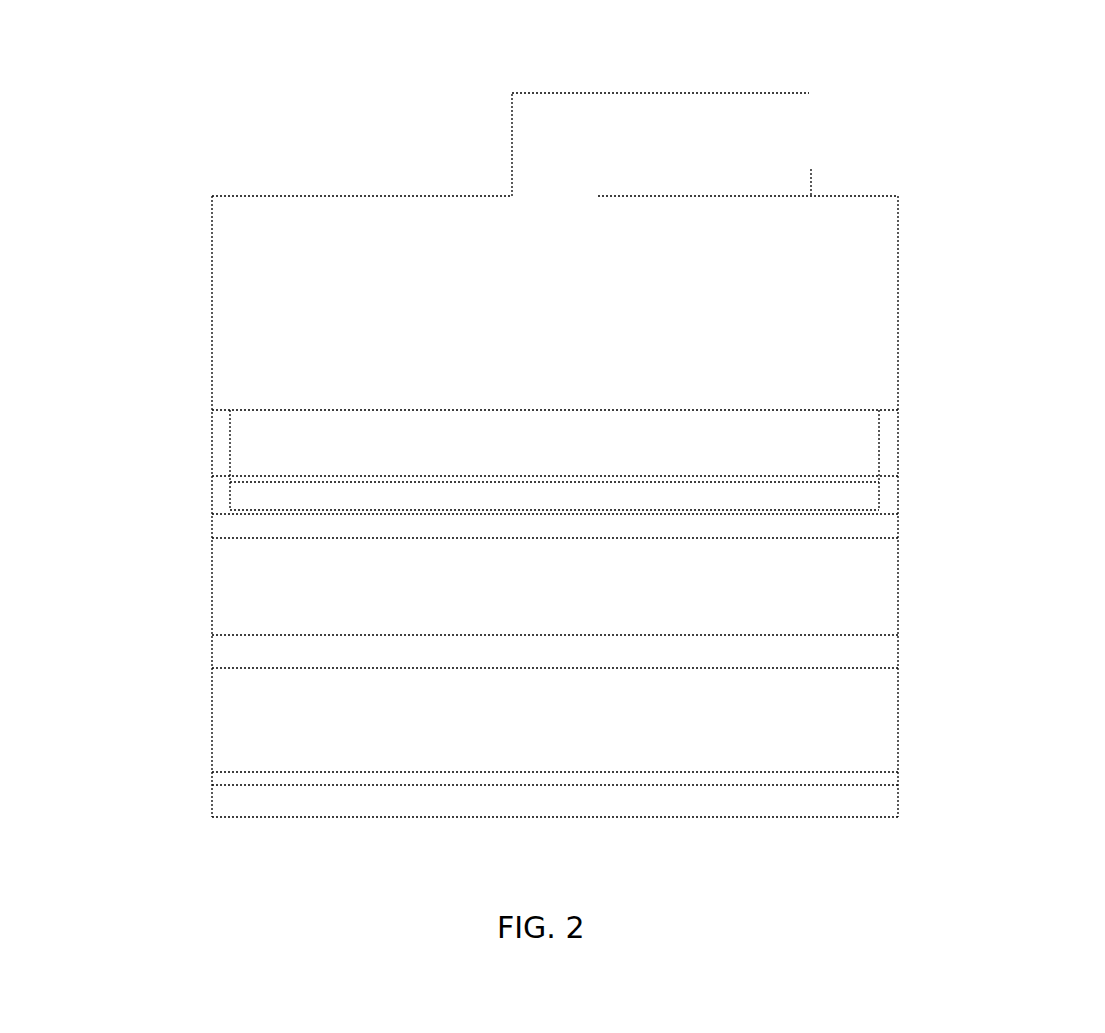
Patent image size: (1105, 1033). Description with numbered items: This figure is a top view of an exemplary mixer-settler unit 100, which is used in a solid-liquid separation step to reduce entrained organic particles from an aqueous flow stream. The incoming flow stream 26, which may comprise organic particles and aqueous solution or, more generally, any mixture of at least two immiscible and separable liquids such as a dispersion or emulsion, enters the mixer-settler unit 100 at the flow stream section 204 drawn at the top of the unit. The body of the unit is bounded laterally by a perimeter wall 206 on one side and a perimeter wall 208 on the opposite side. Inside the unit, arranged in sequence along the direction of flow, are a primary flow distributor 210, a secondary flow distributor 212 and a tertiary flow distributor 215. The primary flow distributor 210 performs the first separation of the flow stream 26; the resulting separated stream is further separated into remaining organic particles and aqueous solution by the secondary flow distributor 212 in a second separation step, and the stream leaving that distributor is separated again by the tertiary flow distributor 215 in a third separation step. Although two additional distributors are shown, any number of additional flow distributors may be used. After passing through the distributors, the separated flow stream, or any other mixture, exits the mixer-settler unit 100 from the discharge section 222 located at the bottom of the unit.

The mixer-settler unit 100 is at (313, 120).
The flow stream section 204 is at (652, 93).
The flow stream 26 is at (782, 140).
The perimeter wall 206 is at (212, 310).
The perimeter wall 208 is at (898, 323).
The primary flow distributor 210 is at (733, 410).
The secondary flow distributor 212 is at (838, 536).
The tertiary flow distributor 215 is at (847, 635).
The discharge section 222 is at (332, 817).